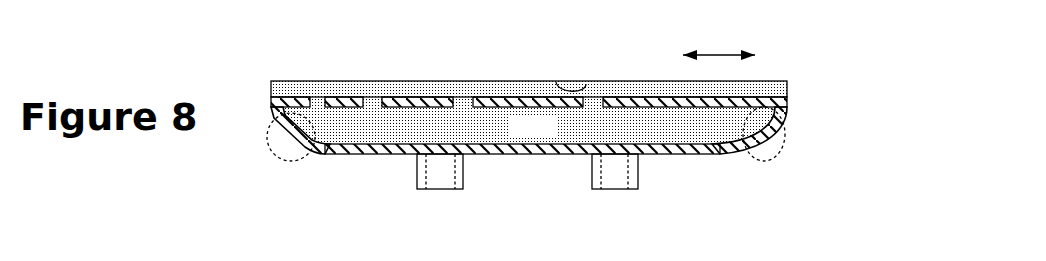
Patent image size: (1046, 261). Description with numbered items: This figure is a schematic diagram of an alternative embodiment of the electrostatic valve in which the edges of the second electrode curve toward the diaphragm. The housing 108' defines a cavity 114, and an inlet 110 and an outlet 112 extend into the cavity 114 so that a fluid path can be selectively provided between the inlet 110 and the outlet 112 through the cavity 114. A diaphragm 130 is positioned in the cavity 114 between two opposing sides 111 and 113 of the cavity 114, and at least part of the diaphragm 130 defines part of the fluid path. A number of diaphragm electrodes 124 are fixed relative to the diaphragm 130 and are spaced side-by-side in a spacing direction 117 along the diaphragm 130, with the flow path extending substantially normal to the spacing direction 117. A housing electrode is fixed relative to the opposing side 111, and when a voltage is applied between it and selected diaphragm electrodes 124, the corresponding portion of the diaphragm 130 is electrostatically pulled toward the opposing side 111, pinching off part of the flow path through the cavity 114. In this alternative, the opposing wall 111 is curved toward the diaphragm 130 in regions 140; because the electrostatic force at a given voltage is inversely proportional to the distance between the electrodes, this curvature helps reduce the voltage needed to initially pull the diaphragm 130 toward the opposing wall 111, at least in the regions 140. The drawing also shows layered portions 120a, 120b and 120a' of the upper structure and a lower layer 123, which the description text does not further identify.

The housing 108' is at (520, 136).
The inlet 110 is at (437, 172).
The opposing side 111 is at (687, 153).
The outlet 112 is at (620, 170).
The opposing side 113 is at (586, 84).
The cavity 114 is at (555, 135).
The spacing direction 117 is at (719, 41).
The top layer left portion 120a is at (320, 72).
The top layer right portion 120a' is at (758, 82).
The top layer middle portion 120b is at (530, 97).
The bottom conductive layer 123 is at (490, 154).
The diaphragm electrodes 124 is at (628, 107).
The diaphragm 130 is at (463, 100).
The regions 140 is at (293, 162).